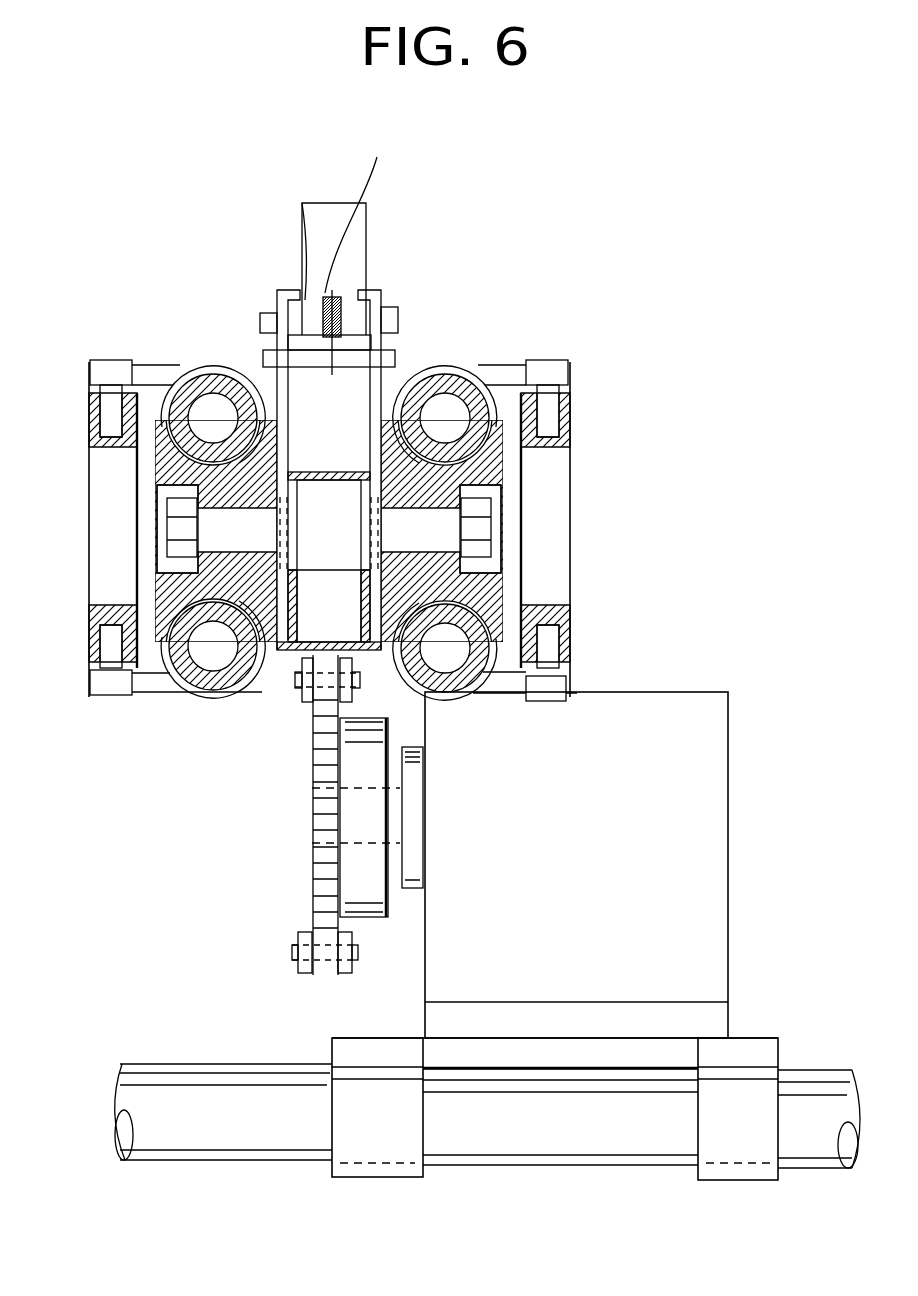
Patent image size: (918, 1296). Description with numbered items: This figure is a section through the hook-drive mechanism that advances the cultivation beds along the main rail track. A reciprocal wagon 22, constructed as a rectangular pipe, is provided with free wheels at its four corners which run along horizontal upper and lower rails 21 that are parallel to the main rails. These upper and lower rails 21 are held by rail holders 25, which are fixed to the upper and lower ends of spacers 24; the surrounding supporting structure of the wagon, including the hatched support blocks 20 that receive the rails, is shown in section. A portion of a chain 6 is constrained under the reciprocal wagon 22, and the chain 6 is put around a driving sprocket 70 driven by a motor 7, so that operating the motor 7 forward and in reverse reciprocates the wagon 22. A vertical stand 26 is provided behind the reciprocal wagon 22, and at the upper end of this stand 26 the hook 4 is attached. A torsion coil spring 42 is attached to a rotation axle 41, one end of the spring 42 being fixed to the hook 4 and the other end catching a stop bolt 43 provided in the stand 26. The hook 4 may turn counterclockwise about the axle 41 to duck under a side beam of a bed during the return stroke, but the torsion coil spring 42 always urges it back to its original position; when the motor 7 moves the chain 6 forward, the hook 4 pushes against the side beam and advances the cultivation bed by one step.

The hook 4 is at (355, 253).
The rotation axle 41 is at (302, 203).
The torsion coil spring 42 is at (366, 204).
The vertical stand 26 is at (283, 290).
The stop bolt 43 is at (357, 362).
The reciprocal wagon 22 is at (312, 472).
The roller support block 20 is at (163, 458).
The upper and lower rails 21 is at (202, 362).
The rail holders 25 is at (232, 365).
The spacers 24 is at (103, 562).
The chain 6 is at (298, 679).
The driving sprocket 70 is at (316, 854).
The motor 7 is at (660, 715).